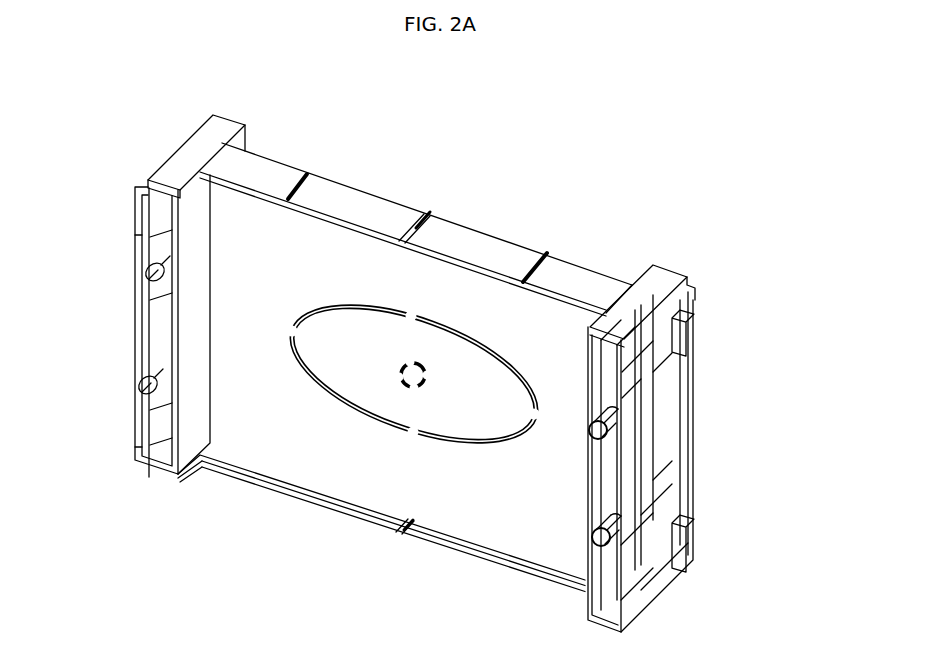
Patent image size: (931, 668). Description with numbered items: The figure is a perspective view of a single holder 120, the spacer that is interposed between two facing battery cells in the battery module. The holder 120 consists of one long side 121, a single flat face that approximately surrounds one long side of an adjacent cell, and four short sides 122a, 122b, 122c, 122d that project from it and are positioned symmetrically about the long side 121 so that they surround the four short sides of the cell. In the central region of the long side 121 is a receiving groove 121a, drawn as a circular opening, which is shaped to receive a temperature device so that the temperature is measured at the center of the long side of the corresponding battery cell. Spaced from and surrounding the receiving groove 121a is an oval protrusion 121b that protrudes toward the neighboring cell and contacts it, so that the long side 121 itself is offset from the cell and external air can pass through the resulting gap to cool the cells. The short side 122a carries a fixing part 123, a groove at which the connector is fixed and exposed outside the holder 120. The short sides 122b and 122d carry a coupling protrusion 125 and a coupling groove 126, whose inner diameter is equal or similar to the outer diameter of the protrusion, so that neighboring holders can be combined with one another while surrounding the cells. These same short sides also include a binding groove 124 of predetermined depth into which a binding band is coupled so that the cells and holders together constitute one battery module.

The holder 120 is at (510, 140).
The long side 121 is at (552, 322).
The receiving groove 121a is at (424, 388).
The protrusion 121b is at (323, 386).
The short side 122a is at (478, 242).
The short side 122b is at (176, 148).
The short side 122c is at (332, 508).
The short side 122d is at (687, 407).
The fixing part 123 is at (423, 219).
The binding groove 124 is at (683, 322).
The coupling protrusion 125 is at (612, 428).
The coupling groove 126 is at (607, 538).